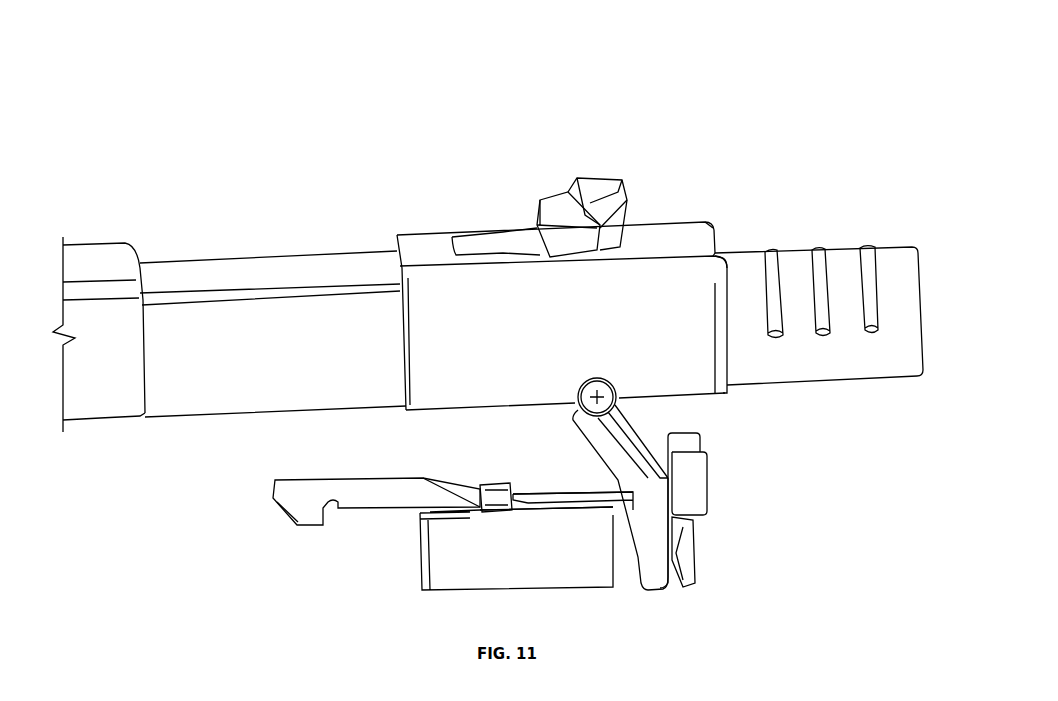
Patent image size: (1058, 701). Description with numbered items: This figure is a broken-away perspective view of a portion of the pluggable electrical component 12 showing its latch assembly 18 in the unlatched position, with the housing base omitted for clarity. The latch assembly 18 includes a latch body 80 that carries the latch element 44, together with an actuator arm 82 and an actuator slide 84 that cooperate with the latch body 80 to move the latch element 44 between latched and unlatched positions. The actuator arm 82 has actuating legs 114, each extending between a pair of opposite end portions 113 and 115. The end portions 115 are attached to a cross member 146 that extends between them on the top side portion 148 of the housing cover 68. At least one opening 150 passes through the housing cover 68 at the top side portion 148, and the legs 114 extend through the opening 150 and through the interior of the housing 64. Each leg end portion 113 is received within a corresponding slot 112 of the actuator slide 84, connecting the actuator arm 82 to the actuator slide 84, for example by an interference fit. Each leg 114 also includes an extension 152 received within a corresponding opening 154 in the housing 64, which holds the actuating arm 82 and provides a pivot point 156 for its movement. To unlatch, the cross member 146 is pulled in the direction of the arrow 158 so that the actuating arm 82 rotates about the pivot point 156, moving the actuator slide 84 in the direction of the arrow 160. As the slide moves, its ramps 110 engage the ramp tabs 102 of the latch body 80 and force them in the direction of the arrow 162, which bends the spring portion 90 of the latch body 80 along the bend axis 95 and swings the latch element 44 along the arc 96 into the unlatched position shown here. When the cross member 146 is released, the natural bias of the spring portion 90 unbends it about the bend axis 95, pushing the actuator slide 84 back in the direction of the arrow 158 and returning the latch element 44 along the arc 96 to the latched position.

The pluggable electrical component 12 is at (272, 110).
The latch assembly 18 is at (762, 433).
The latch element 44 is at (288, 518).
The housing 64 is at (163, 258).
The housing cover 68 is at (70, 378).
The latch body 80 is at (572, 507).
The actuator arm 82 is at (260, 440).
The actuator slide 84 is at (413, 568).
The spring portion 90 is at (612, 497).
The bend axis 95 is at (595, 507).
The arc 96 is at (157, 450).
The ramp tab 102 is at (490, 482).
The ramp 110 is at (522, 485).
The slot 112 is at (680, 587).
The end portion 113 is at (655, 620).
The actuating leg 114 is at (640, 425).
The end portion 115 is at (530, 224).
The cross member 146 is at (556, 198).
The top side portion 148 is at (327, 250).
The opening 150 is at (717, 233).
The extension 152 is at (620, 395).
The opening 154 is at (612, 385).
The pivot point 156 is at (575, 413).
The arrow 158 is at (763, 180).
The arrow 160 is at (732, 560).
The arrow 162 is at (227, 482).